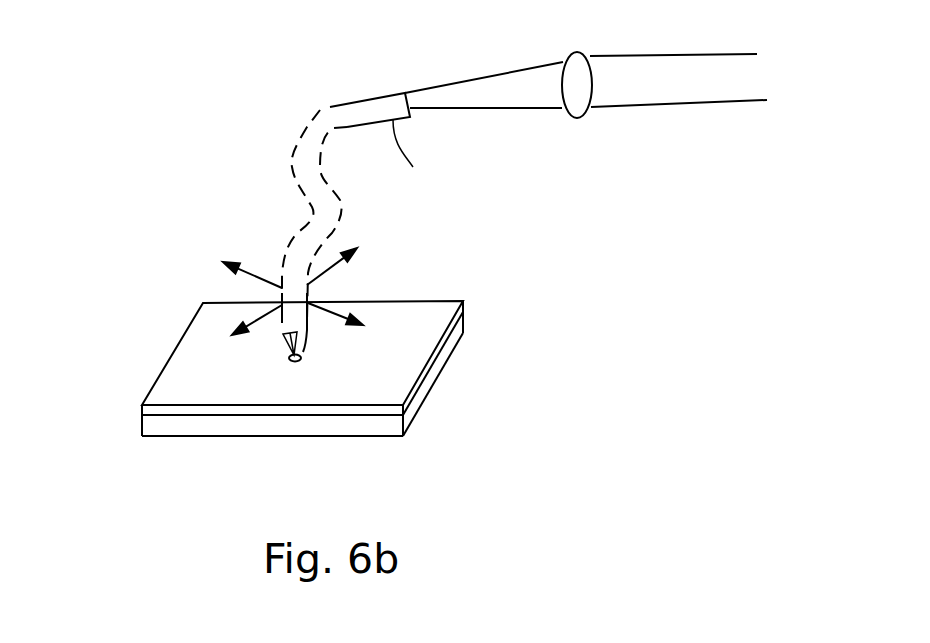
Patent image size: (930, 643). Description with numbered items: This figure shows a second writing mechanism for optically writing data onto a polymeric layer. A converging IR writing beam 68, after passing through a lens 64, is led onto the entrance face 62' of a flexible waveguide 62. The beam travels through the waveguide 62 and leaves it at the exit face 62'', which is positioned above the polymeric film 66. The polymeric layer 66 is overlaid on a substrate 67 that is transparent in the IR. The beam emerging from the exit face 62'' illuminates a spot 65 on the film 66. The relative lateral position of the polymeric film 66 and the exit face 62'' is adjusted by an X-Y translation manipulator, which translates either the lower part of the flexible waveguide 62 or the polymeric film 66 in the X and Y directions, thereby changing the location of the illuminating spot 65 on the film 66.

The waveguide 62 is at (314, 175).
The entrance face 62' is at (399, 116).
The exit face 62'' is at (236, 300).
The lens 64 is at (575, 120).
The spot 65 is at (295, 362).
The polymeric layer 66 is at (142, 412).
The substrate 67 is at (424, 389).
The writing beam 68 is at (586, 81).